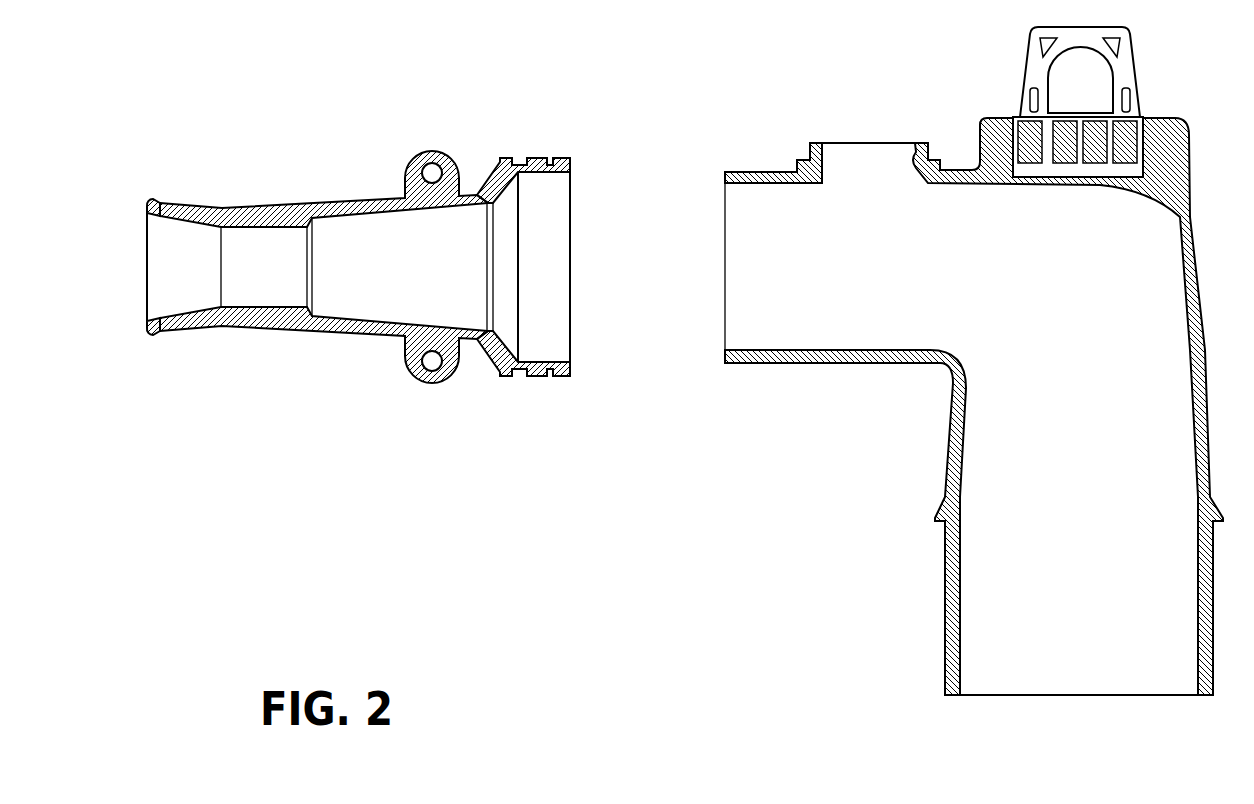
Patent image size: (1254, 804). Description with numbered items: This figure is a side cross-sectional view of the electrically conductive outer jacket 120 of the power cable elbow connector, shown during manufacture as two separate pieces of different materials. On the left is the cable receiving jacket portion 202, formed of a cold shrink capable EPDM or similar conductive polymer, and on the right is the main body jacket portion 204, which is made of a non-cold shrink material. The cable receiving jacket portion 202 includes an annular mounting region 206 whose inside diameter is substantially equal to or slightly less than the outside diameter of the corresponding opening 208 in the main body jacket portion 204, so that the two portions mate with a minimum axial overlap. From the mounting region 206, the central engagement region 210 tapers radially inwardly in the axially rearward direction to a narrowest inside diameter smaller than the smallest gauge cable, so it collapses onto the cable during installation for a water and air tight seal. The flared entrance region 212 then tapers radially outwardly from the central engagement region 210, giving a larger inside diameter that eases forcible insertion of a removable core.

The outer jacket 120 is at (636, 556).
The cable receiving jacket portion 202 is at (372, 153).
The main body jacket portion 204 is at (892, 403).
The annular mounting region 206 is at (544, 165).
The opening 208 is at (724, 364).
The central engagement region 210 is at (273, 313).
The flared entrance region 212 is at (175, 203).